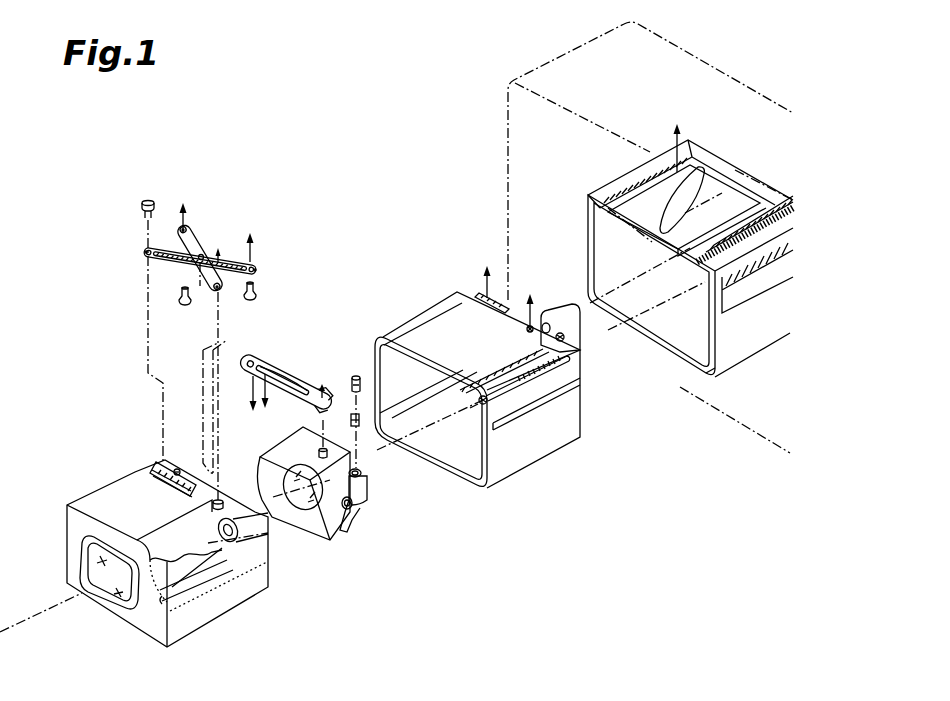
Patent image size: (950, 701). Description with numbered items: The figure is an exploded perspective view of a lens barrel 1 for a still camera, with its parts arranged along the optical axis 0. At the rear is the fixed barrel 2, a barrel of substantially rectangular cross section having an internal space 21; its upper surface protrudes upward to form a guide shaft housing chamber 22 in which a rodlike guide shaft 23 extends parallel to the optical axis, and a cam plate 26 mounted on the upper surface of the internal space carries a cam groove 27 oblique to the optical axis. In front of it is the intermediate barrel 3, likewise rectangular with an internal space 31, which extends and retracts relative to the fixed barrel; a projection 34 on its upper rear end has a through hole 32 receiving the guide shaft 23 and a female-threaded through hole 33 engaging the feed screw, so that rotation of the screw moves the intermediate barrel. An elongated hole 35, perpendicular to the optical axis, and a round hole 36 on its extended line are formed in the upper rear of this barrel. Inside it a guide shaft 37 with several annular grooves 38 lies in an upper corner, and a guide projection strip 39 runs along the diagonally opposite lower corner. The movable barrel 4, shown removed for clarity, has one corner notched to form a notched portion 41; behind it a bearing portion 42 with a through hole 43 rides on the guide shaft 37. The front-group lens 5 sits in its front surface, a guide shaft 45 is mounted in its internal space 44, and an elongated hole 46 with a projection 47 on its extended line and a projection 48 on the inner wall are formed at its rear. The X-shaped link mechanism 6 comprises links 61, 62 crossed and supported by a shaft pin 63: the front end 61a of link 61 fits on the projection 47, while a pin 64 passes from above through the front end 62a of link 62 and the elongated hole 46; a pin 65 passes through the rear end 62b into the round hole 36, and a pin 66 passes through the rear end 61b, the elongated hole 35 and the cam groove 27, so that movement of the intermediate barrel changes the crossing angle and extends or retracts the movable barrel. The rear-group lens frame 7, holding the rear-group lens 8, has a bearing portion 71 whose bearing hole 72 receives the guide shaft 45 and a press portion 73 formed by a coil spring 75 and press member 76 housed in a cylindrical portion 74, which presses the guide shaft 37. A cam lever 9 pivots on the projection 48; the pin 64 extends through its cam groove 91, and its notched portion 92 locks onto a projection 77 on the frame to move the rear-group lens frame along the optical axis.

The lens barrel 1 is at (348, 134).
The optical axis 0 is at (32, 620).
The fixed barrel 2 is at (690, 265).
The internal space 21 is at (686, 388).
The guide shaft housing chamber 22 is at (752, 180).
The guide shaft 23 is at (768, 198).
The cam plate 26 is at (708, 183).
The cam groove 27 is at (663, 196).
The intermediate barrel 3 is at (502, 386).
The internal space 31 is at (475, 470).
The through hole 32 is at (546, 323).
The through hole 33 is at (563, 340).
The projection 34 is at (560, 308).
The elongated hole 35 is at (477, 298).
The round hole 36 is at (529, 326).
The guide shaft 37 is at (507, 392).
The grooves 38 is at (569, 380).
The guide projection strip 39 is at (397, 433).
The movable barrel 4 is at (193, 479).
The notched portion 41 is at (267, 590).
The bearing portion 42 is at (253, 527).
The through hole 43 is at (263, 567).
The internal space 44 is at (227, 575).
The guide shaft 45 is at (197, 580).
The elongated hole 46 is at (157, 472).
The projection 47 is at (223, 506).
The projection 48 is at (188, 468).
The front-group lens 5 is at (107, 607).
The link mechanism 6 is at (146, 252).
The link 61 is at (203, 235).
The front end 61a is at (220, 289).
The rear end 61b is at (182, 229).
The link 62 is at (193, 270).
The front end 62a is at (145, 255).
The rear end 62b is at (256, 270).
The shaft pin 63 is at (203, 256).
The pin 64 is at (147, 202).
The pin 65 is at (257, 297).
The pin 66 is at (186, 305).
The rear-group lens frame 7 is at (379, 510).
The bearing portion 71 is at (368, 505).
The bearing hole 72 is at (348, 520).
The press portion 73 is at (363, 469).
The cylindrical portion 74 is at (368, 483).
The coil spring 75 is at (352, 415).
The press member 76 is at (353, 377).
The projection 77 is at (325, 449).
The rear-group lens 8 is at (278, 460).
The cam lever 9 is at (286, 371).
The cam groove 91 is at (282, 379).
The notched portion 92 is at (322, 400).